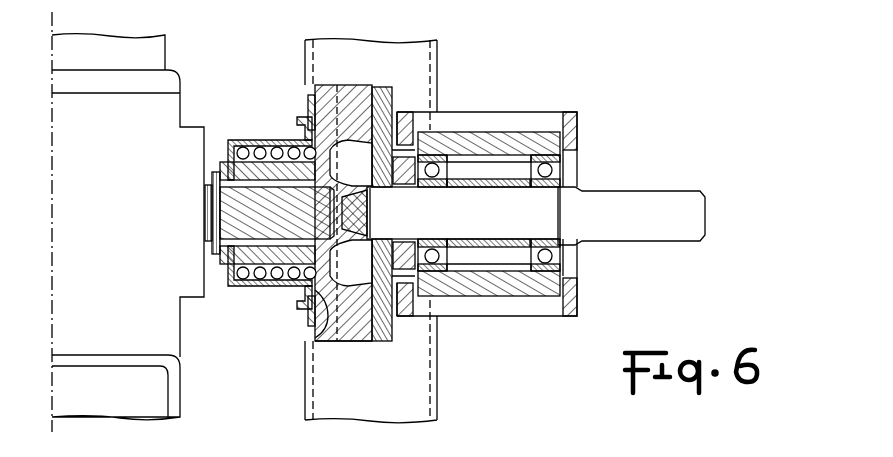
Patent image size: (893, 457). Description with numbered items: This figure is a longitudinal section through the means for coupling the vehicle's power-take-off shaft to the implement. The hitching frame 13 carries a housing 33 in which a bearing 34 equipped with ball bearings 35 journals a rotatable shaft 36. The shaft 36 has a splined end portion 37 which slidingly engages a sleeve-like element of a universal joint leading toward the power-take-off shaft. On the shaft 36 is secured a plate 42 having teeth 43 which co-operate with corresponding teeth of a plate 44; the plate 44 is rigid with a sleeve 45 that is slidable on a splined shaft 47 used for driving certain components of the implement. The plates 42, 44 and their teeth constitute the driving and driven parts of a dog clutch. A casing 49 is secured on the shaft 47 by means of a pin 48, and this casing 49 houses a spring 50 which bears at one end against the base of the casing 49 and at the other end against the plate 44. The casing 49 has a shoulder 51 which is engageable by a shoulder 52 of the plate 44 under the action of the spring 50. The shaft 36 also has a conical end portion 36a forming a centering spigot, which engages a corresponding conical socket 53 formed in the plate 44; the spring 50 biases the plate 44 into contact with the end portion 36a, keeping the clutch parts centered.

The hitching frame 13 is at (418, 370).
The housing 33 is at (578, 124).
The bearing 34 is at (497, 290).
The ball bearings 35 is at (524, 132).
The rotatable shaft 36 is at (463, 213).
The conical end portion 36a is at (348, 211).
The splined end portion 37 is at (628, 190).
The plate 42 is at (377, 85).
The teeth 43 is at (353, 341).
The plate 44 is at (318, 347).
The sleeve 45 is at (227, 262).
The splined shaft 47 is at (230, 227).
The pin 48 is at (215, 197).
The casing 49 is at (230, 153).
The spring 50 is at (258, 148).
The shoulder 51 is at (320, 333).
The shoulder 52 is at (293, 297).
The conical socket 53 is at (300, 150).